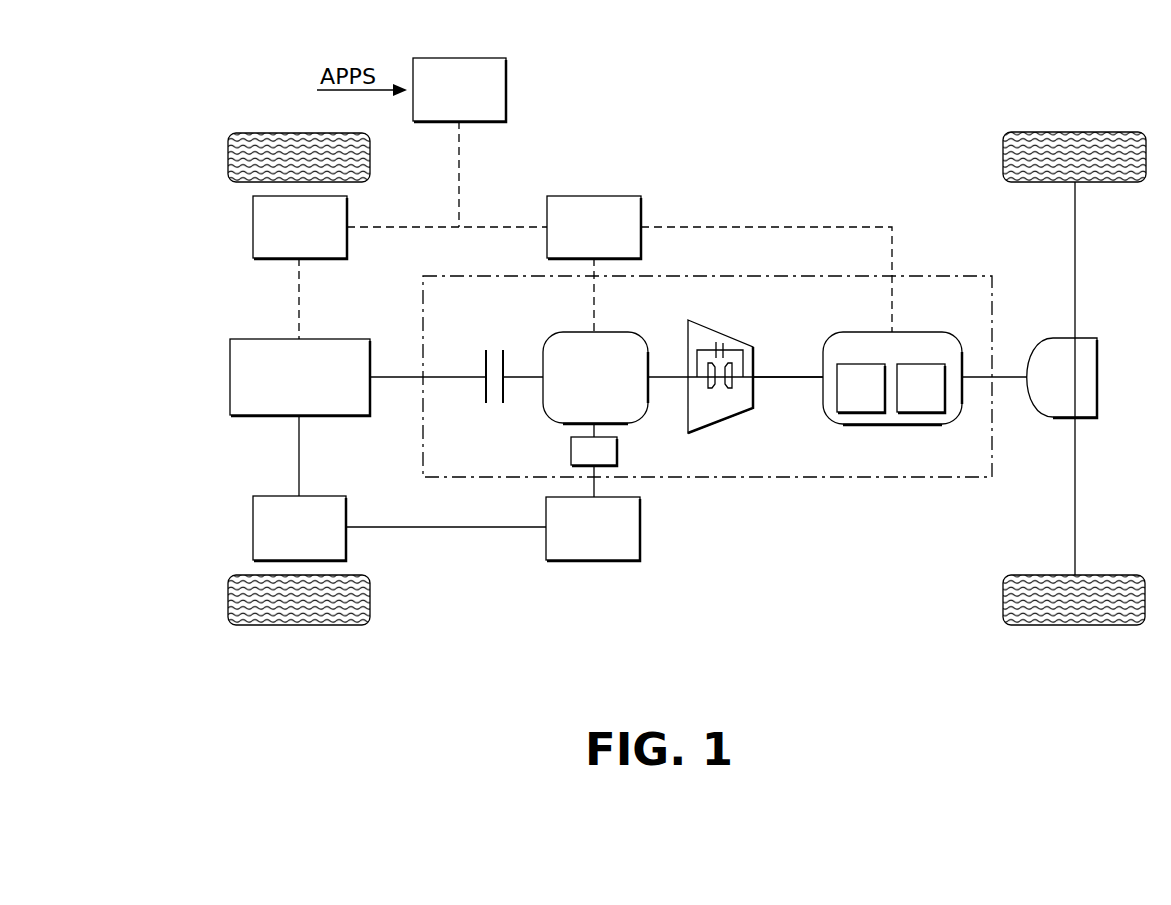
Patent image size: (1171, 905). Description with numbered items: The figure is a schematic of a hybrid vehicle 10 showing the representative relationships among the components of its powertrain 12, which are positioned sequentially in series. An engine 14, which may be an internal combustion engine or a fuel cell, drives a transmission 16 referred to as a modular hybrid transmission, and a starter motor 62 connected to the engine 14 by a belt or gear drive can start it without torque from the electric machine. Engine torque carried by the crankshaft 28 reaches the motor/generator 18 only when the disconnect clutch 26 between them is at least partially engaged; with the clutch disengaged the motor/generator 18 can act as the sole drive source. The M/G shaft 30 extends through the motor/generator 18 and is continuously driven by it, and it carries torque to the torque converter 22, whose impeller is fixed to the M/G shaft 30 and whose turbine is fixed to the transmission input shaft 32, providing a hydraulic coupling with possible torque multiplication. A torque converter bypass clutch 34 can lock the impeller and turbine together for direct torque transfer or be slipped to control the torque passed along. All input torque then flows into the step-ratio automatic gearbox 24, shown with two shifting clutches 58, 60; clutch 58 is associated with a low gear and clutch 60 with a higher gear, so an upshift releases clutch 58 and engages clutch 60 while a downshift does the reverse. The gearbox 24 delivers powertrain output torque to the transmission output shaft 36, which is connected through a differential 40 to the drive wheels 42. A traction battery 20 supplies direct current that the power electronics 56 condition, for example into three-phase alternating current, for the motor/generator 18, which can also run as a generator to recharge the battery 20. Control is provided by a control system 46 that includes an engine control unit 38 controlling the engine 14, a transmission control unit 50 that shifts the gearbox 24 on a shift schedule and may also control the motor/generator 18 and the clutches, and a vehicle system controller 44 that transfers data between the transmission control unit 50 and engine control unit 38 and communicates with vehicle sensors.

The hybrid vehicle 10 is at (858, 72).
The powertrain 12 is at (510, 593).
The engine 14 is at (230, 377).
The transmission 16 is at (828, 478).
The electric motor/generator 18 is at (613, 332).
The traction battery 20 is at (594, 560).
The torque converter 22 is at (703, 433).
The gearbox 24 is at (918, 332).
The disconnect clutch 26 is at (485, 397).
The crankshaft 28 is at (411, 372).
The M/G shaft 30 is at (518, 376).
The transmission input shaft 32 is at (782, 378).
The torque converter bypass clutch 34 is at (738, 346).
The transmission output shaft 36 is at (1005, 377).
The engine control unit 38 is at (253, 227).
The differential 40 is at (1097, 377).
The drive wheels 42 is at (1075, 132).
The vehicle system controller 44 is at (460, 58).
The control system 46 is at (540, 55).
The transmission control unit 50 is at (641, 213).
The power electronics 56 is at (571, 452).
The shifting clutch 58 is at (861, 388).
The shifting clutch 60 is at (921, 388).
The starter motor 62 is at (253, 528).